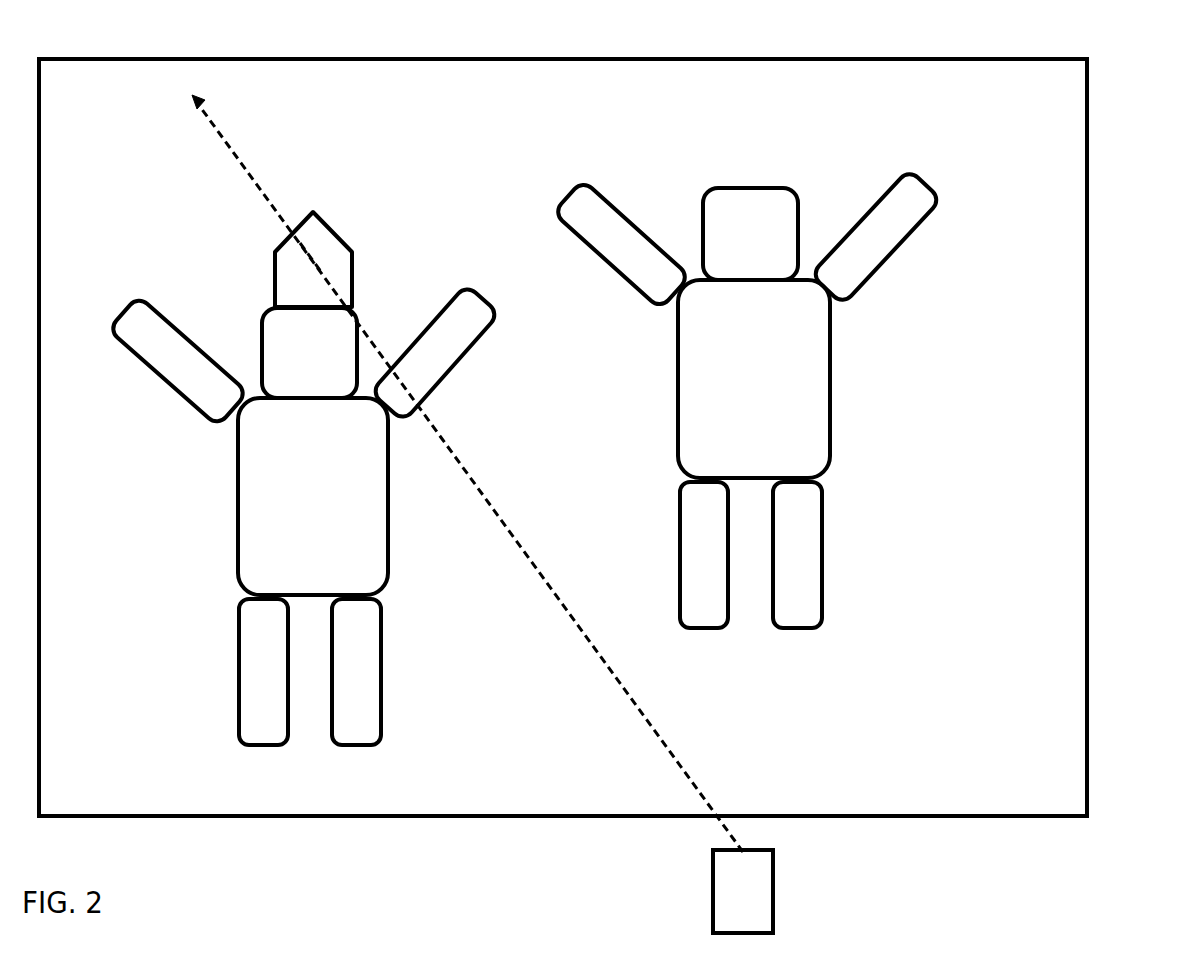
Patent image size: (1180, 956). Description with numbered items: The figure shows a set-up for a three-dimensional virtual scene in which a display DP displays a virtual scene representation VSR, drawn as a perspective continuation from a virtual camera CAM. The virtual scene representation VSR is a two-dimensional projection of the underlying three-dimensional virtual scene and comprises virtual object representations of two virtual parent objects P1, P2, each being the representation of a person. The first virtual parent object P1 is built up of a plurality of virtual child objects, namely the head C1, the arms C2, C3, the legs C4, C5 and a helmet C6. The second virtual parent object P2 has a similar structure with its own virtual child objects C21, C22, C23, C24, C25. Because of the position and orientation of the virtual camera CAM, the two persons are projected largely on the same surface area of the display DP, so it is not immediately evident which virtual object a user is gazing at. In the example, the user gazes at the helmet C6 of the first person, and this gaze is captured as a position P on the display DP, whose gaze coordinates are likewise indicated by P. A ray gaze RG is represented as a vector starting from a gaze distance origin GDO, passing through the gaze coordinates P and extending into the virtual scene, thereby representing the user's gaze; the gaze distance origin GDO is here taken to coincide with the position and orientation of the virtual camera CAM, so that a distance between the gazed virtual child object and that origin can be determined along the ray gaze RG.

The virtual scene representation VSR is at (84, 58).
The display DP is at (594, 437).
The ray gaze RG is at (237, 132).
The position P is at (308, 252).
The virtual child object C6 is at (313, 259).
The virtual child object C1 is at (309, 353).
The virtual parent object P1 is at (313, 496).
The virtual child object C2 is at (177, 361).
The virtual child object C3 is at (435, 353).
The virtual child object C4 is at (263, 672).
The virtual child object C5 is at (356, 672).
The virtual child object C21 is at (750, 234).
The virtual parent object P2 is at (754, 379).
The virtual child object C22 is at (621, 242).
The virtual child object C23 is at (879, 236).
The virtual child object C24 is at (676, 555).
The virtual child object C25 is at (825, 555).
The virtual camera CAM is at (790, 891).
The gaze distance origin GDO is at (752, 855).